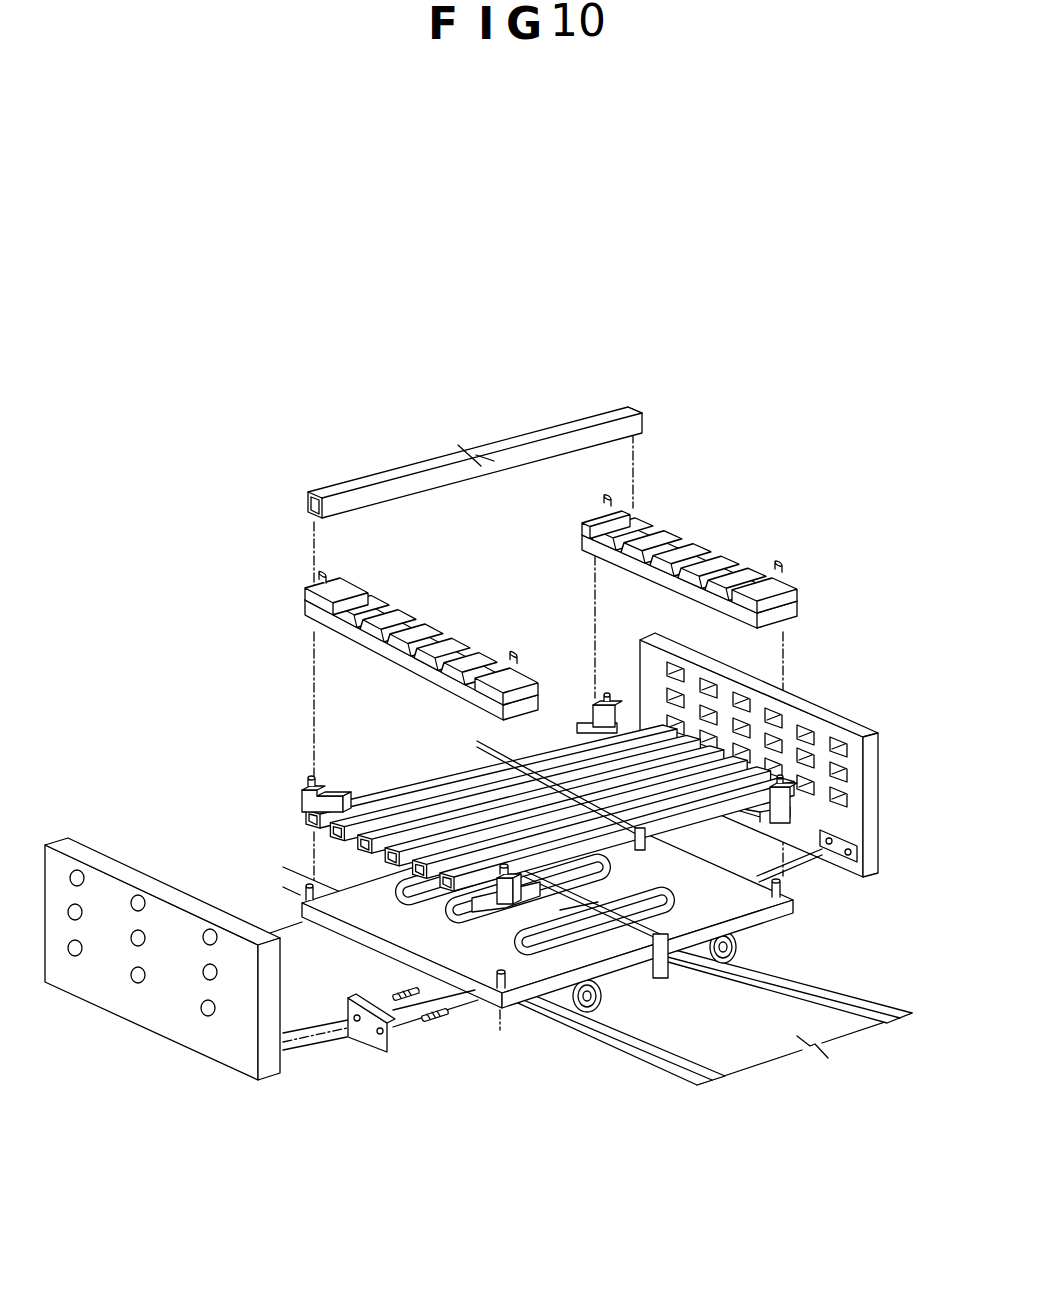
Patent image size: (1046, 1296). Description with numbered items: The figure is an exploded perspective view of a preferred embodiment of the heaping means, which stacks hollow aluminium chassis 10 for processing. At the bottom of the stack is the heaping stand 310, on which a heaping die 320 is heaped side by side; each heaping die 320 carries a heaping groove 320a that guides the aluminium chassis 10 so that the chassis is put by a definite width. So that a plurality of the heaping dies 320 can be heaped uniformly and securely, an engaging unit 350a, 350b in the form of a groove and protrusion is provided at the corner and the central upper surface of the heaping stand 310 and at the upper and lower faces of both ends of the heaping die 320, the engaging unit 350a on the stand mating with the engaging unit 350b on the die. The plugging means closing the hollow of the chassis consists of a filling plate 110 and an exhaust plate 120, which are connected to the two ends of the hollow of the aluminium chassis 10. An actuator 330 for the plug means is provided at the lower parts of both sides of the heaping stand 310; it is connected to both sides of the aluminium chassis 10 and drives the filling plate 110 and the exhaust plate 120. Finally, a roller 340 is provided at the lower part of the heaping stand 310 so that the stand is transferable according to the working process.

The aluminium chassis 10 is at (557, 426).
The filling plate 110 is at (116, 1028).
The exhaust plate 120 is at (875, 722).
The heaping stand 310 is at (500, 1024).
The heaping die 320 is at (680, 528).
The heaping groove 320a is at (757, 583).
The actuator 330 is at (420, 1033).
The roller 340 is at (740, 958).
The engaging unit 350a is at (566, 952).
The engaging unit 350b is at (312, 778).